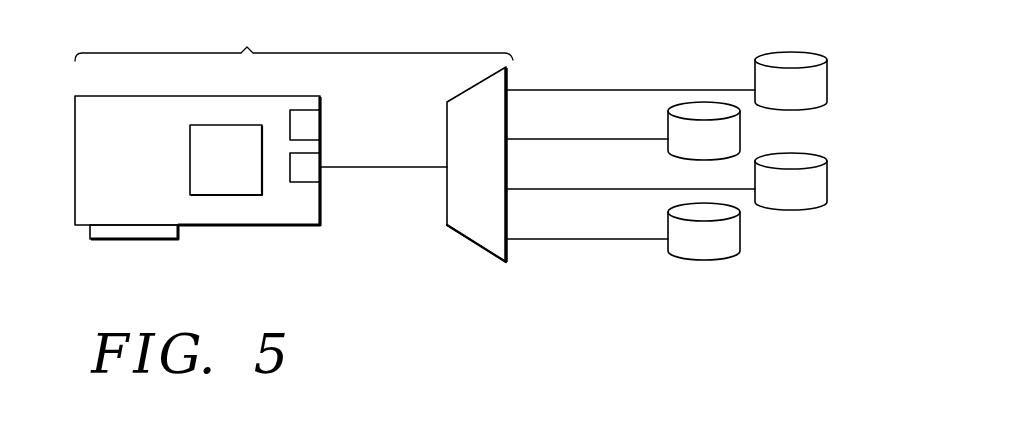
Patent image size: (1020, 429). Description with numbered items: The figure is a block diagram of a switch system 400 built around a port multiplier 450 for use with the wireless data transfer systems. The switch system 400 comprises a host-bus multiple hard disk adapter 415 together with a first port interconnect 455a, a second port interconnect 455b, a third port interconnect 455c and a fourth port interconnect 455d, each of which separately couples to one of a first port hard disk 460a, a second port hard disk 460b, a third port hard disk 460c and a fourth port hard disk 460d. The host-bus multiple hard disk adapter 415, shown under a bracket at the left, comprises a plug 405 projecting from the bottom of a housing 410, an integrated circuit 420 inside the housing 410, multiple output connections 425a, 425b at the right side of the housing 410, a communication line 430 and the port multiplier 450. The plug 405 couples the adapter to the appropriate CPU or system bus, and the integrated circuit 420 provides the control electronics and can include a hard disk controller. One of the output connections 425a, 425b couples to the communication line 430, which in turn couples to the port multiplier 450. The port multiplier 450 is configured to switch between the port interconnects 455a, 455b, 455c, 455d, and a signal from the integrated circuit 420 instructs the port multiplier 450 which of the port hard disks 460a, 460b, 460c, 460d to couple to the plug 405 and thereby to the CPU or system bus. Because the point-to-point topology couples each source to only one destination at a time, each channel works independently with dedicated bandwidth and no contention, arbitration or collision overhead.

The switch system 400 is at (318, 303).
The plug 405 is at (100, 231).
The housing 410 is at (137, 95).
The host-bus multiple hard disk adapter 415 is at (294, 40).
The integrated circuit 420 is at (198, 151).
The output connection 425a is at (307, 170).
The output connection 425b is at (308, 122).
The communication line 430 is at (362, 166).
The port multiplier 450 is at (463, 238).
The first port interconnect 455a is at (547, 90).
The second port interconnect 455b is at (543, 139).
The third port interconnect 455c is at (545, 189).
The fourth port interconnect 455d is at (548, 239).
The first port hard disk 460a is at (815, 86).
The second port hard disk 460b is at (731, 136).
The third port hard disk 460c is at (818, 185).
The fourth port hard disk 460d is at (731, 237).